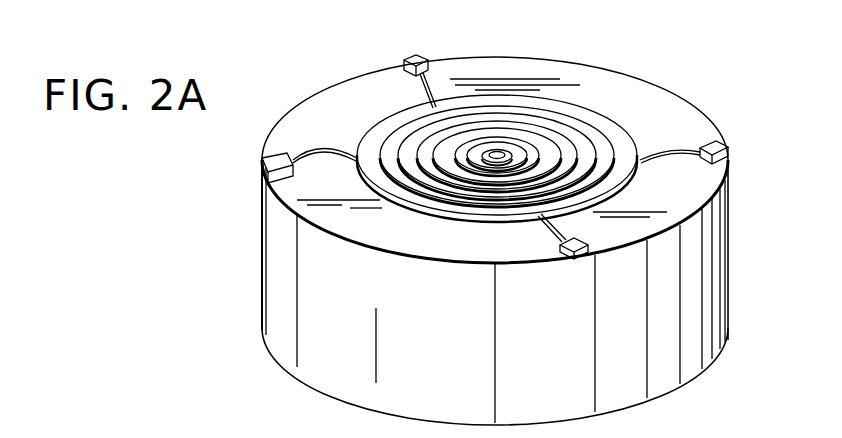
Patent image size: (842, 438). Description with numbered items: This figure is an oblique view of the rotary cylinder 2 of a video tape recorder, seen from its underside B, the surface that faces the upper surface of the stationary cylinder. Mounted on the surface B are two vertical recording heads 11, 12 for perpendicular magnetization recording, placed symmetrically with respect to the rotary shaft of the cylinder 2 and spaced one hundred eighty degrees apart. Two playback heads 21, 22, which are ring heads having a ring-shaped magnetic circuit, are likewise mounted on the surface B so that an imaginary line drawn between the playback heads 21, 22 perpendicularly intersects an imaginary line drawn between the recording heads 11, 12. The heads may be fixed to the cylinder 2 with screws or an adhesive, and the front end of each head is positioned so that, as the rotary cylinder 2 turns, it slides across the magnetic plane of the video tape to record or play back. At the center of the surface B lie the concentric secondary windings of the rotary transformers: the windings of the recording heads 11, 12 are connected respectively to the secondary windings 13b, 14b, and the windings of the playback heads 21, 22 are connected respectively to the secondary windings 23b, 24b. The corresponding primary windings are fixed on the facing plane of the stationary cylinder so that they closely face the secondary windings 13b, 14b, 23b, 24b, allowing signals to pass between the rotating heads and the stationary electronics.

The rotary cylinder 2 is at (718, 271).
The underside of the rotary cylinder B is at (290, 115).
The vertical recording head 11 is at (571, 258).
The vertical recording head 12 is at (412, 55).
The playback head 21 is at (720, 145).
The playback head 22 is at (262, 160).
The secondary winding of rotary transformer 13b is at (553, 111).
The secondary winding of rotary transformer 14b is at (390, 131).
The secondary winding of rotary transformer 23b is at (627, 148).
The secondary winding of rotary transformer 24b is at (597, 129).